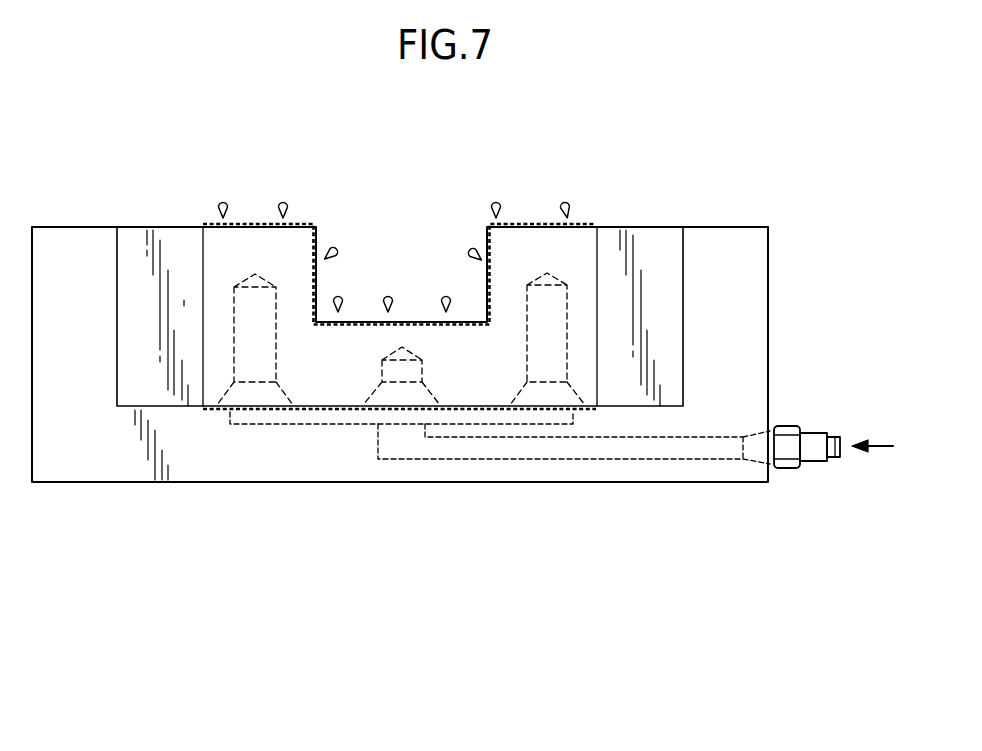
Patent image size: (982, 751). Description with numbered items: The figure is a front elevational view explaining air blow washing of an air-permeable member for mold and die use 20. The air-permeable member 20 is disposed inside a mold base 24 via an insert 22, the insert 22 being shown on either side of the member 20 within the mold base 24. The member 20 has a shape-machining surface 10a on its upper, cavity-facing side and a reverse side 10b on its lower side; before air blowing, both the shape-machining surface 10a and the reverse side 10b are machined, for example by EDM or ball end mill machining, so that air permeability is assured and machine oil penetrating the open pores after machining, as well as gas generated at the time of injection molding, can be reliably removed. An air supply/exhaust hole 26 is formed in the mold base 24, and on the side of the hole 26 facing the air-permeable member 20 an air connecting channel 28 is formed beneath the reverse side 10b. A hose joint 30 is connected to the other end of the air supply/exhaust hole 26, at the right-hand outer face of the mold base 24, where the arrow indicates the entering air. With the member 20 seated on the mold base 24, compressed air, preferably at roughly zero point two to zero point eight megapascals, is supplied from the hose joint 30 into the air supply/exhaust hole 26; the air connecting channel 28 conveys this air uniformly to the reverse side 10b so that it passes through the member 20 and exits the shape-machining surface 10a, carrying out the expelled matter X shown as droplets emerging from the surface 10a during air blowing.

The shape-machining surface 10a is at (250, 227).
The reverse side 10b is at (270, 410).
The air-permeable member for mold and die use 20 is at (525, 235).
The insert 22 is at (648, 235).
The mold base 24 is at (730, 238).
The air supply/exhaust hole 26 is at (570, 447).
The air connecting channel 28 is at (340, 425).
The hose joint 30 is at (810, 425).
The liquid X is at (300, 222).